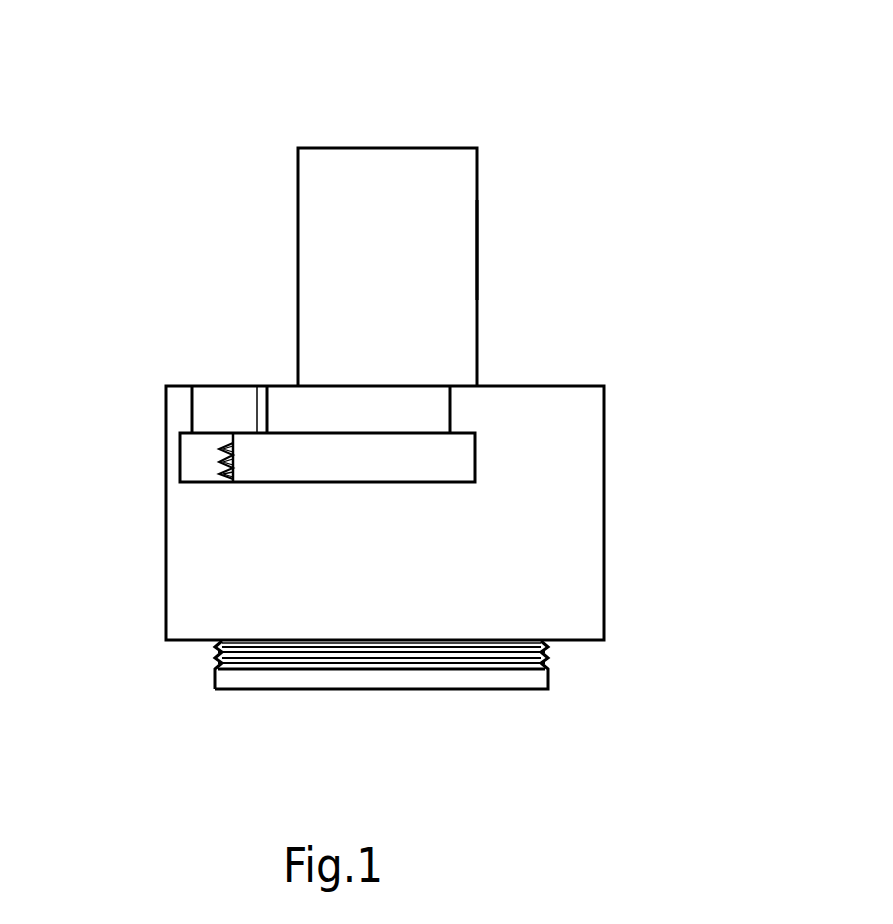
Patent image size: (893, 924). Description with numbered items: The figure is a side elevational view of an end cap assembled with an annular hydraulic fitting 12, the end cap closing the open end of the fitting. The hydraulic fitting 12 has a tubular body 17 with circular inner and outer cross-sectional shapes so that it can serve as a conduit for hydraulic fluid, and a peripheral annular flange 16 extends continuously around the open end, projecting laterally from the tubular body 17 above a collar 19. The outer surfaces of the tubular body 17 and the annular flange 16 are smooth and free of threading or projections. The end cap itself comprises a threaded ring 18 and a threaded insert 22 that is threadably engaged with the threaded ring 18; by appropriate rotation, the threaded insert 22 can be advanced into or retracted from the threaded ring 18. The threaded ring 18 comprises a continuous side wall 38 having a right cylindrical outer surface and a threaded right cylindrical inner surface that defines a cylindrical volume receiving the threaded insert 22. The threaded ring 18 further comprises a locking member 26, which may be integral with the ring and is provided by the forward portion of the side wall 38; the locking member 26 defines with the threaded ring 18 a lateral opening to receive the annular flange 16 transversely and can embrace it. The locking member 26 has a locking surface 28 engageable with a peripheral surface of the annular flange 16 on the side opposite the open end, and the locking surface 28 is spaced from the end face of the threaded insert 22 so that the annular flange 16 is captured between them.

The hydraulic fitting 12 is at (480, 163).
The tubular body 17 is at (456, 268).
The collar 19 is at (420, 410).
The threaded ring 18 is at (604, 440).
The locking member 26 is at (218, 398).
The locking surface 28 is at (200, 452).
The annular flange 16 is at (430, 452).
The side wall 38 is at (433, 574).
The threaded insert 22 is at (277, 690).